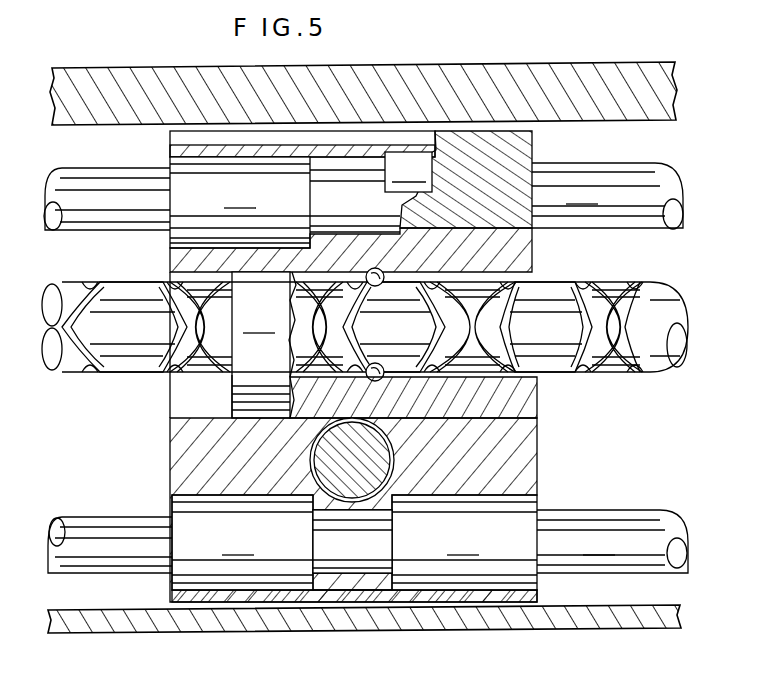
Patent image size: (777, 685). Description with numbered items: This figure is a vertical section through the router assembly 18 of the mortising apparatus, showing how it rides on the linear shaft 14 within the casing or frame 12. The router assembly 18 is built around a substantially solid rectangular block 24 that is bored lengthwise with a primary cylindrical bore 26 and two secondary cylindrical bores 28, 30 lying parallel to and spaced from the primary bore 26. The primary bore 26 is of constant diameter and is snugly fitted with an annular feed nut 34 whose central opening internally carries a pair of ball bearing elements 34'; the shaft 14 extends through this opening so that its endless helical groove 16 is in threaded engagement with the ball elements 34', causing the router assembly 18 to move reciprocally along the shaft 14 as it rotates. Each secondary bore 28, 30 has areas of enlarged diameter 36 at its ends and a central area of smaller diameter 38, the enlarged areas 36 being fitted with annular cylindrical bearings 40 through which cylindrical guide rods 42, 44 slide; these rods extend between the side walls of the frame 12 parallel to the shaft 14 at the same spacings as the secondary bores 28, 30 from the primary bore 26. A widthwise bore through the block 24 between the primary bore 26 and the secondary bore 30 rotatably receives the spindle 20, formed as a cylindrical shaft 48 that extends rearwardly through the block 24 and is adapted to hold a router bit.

The casing or frame 12 is at (500, 64).
The linear shaft 14 is at (366, 340).
The helical groove 16 is at (578, 362).
The router assembly 18 is at (153, 418).
The spindle 20 is at (538, 455).
The rectangular block 24 is at (533, 134).
The primary cylindrical bore 26 is at (182, 390).
The secondary cylindrical bore 28 is at (172, 160).
The secondary cylindrical bore 30 is at (540, 498).
The annular feed nut 34 is at (374, 323).
The ball bearing elements 34' is at (393, 324).
The areas of enlarged diameter 36 is at (185, 146).
The central area of smaller diameter 38 is at (370, 150).
The annular cylindrical bearings 40 is at (353, 371).
The cylindrical guide rod 42 is at (607, 196).
The cylindrical guide rod 44 is at (612, 541).
The cylindrical shaft 48 is at (378, 410).